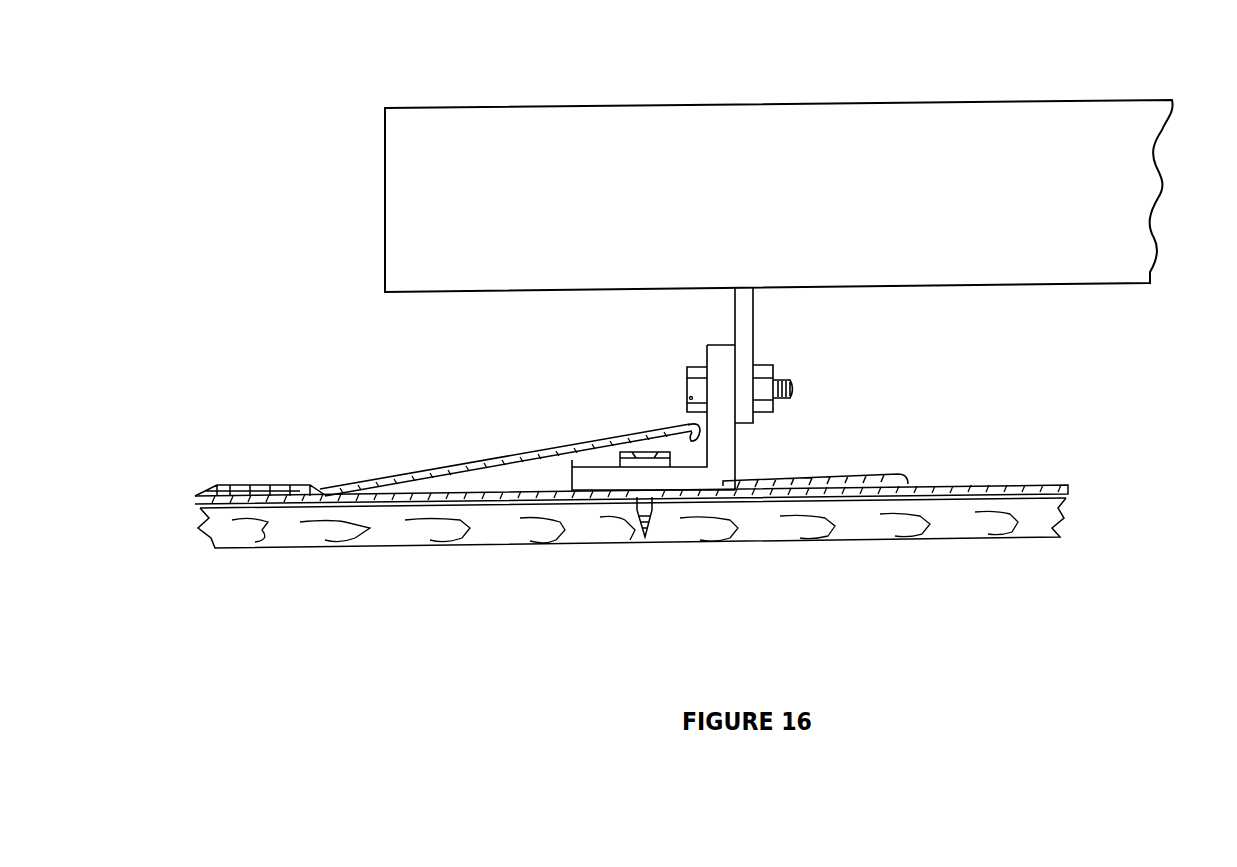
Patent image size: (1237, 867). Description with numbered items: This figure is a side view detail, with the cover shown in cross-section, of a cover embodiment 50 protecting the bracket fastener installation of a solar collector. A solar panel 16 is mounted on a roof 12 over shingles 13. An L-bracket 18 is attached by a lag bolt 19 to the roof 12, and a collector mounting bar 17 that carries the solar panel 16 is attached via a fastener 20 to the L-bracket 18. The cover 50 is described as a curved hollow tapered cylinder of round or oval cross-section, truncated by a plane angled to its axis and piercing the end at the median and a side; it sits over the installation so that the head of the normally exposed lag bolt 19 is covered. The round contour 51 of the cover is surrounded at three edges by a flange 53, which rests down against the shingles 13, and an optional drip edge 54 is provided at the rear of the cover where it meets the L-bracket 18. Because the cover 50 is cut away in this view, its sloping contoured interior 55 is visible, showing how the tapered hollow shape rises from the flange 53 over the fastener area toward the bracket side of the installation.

The roof 12 is at (1065, 531).
The shingles 13 is at (887, 473).
The solar panel 16 is at (993, 93).
The collector mounting bar 17 is at (753, 315).
The L-bracket 18 is at (722, 461).
The lag bolt 19 is at (658, 512).
The fastener 20 is at (786, 372).
The cover embodiment 50 is at (583, 386).
The round contour 51 is at (552, 443).
The flange 53 is at (283, 488).
The drip edge 54 is at (689, 423).
The sloping contoured interior 55 is at (520, 476).